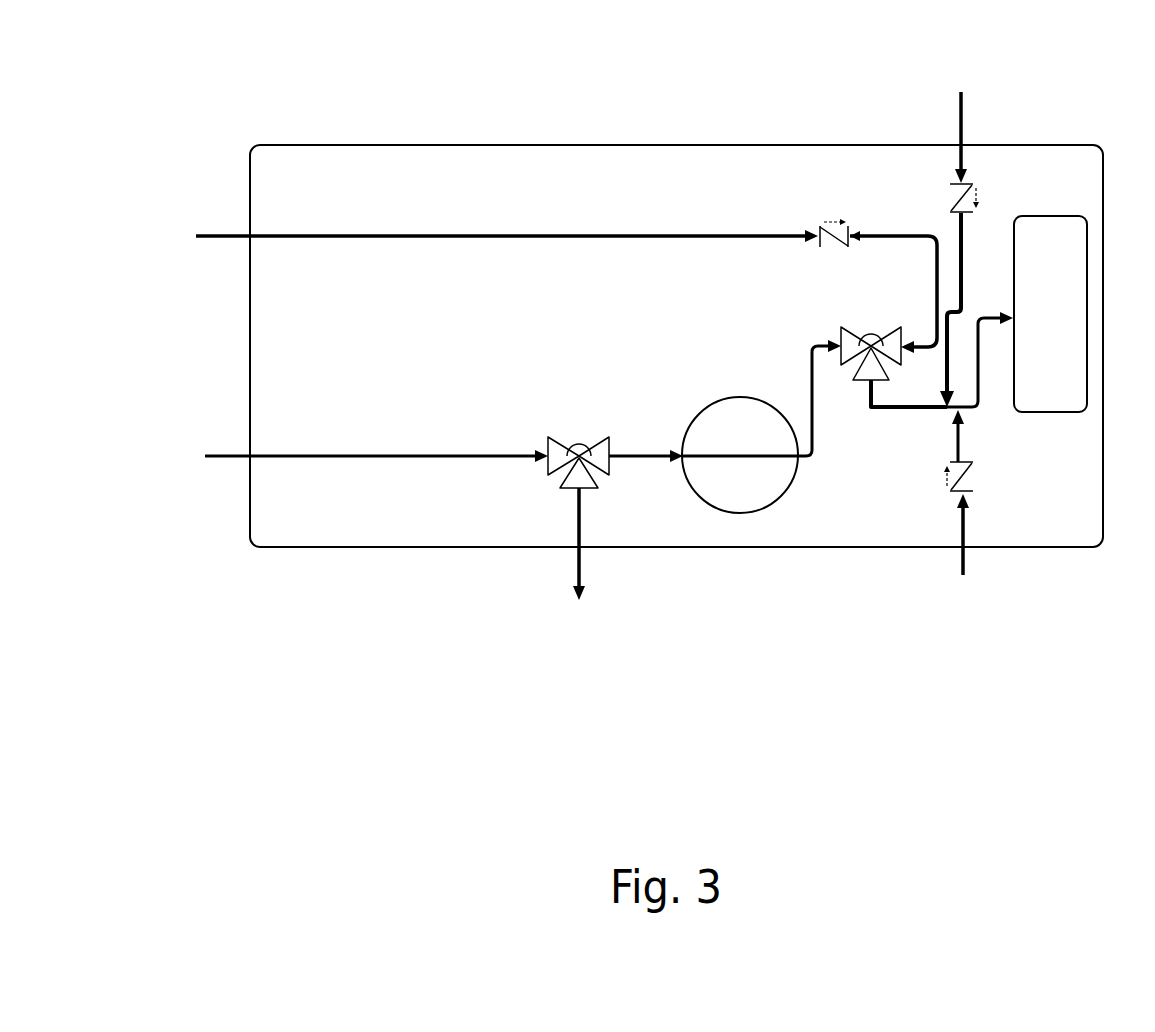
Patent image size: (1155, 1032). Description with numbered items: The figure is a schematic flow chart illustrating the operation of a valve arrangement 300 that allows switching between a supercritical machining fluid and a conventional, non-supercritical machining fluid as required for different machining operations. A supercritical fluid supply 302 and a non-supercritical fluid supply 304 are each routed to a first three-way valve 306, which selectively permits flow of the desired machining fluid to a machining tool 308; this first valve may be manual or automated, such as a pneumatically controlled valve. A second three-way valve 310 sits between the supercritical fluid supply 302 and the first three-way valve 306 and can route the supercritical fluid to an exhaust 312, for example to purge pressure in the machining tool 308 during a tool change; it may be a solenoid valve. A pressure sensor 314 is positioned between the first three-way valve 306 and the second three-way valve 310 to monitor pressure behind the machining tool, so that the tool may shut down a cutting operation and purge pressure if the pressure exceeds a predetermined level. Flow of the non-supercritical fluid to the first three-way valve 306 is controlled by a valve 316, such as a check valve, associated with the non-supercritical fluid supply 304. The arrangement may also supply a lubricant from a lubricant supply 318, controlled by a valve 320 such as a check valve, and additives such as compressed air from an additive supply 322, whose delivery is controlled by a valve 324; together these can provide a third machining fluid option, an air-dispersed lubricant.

The valve arrangement 300 is at (383, 94).
The supercritical fluid supply 302 is at (472, 450).
The non-supercritical fluid supply 304 is at (503, 236).
The first three-way valve 306 is at (850, 330).
The machining tool 308 is at (1050, 314).
The second three-way valve 310 is at (561, 437).
The exhaust 312 is at (578, 573).
The pressure sensor 314 is at (710, 410).
The valve 316 is at (818, 222).
The lubricant supply 318 is at (961, 115).
The valve 320 is at (995, 190).
The additive supply 322 is at (960, 556).
The valve 324 is at (977, 489).